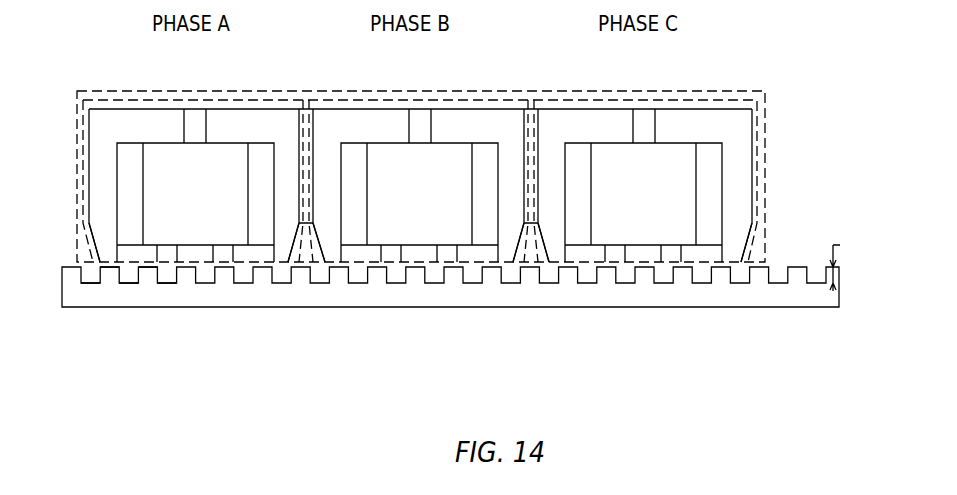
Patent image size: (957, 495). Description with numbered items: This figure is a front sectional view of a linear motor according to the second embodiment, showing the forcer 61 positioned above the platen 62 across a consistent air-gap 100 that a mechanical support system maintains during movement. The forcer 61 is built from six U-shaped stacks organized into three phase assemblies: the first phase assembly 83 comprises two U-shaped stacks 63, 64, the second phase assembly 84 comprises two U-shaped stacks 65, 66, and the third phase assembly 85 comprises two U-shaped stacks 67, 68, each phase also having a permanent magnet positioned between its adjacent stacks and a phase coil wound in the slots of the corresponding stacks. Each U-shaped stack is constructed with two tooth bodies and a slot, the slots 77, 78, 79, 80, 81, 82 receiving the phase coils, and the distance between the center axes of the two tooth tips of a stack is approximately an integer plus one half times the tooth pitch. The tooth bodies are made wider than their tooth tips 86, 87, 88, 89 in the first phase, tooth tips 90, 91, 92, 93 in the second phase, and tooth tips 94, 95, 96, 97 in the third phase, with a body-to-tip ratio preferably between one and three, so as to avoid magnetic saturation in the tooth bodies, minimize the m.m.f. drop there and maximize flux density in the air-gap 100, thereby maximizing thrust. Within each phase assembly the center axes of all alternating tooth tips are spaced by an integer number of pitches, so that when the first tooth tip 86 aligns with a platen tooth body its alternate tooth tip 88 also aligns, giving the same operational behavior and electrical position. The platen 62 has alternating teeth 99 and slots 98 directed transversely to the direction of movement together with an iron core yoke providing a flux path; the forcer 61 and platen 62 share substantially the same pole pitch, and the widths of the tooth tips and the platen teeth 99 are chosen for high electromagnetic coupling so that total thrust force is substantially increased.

The forcer 61 is at (765, 200).
The platen 62 is at (830, 300).
The U-shaped stack 63 is at (108, 127).
The U-shaped stack 64 is at (252, 118).
The U-shaped stack 65 is at (383, 125).
The U-shaped stack 66 is at (478, 123).
The U-shaped stack 67 is at (593, 120).
The U-shaped stack 68 is at (700, 130).
The phase coil slot 77 is at (97, 188).
The phase coil slot 78 is at (285, 168).
The phase coil slot 79 is at (323, 168).
The phase coil slot 80 is at (505, 172).
The phase coil slot 81 is at (548, 177).
The phase coil slot 82 is at (733, 183).
The first phase assembly 83 is at (222, 107).
The second phase assembly 84 is at (437, 103).
The third phase assembly 85 is at (657, 108).
The tooth tip 86 is at (108, 257).
The tooth tip 87 is at (164, 250).
The tooth tip 88 is at (224, 255).
The tooth tip 89 is at (283, 252).
The tooth tip 90 is at (332, 252).
The tooth tip 91 is at (390, 257).
The tooth tip 92 is at (448, 257).
The tooth tip 93 is at (507, 250).
The tooth tip 94 is at (553, 253).
The tooth tip 95 is at (614, 257).
The tooth tip 96 is at (672, 257).
The tooth tip 97 is at (730, 253).
The slots 98 is at (148, 276).
The teeth 99 is at (147, 272).
The air-gap 100 is at (856, 262).